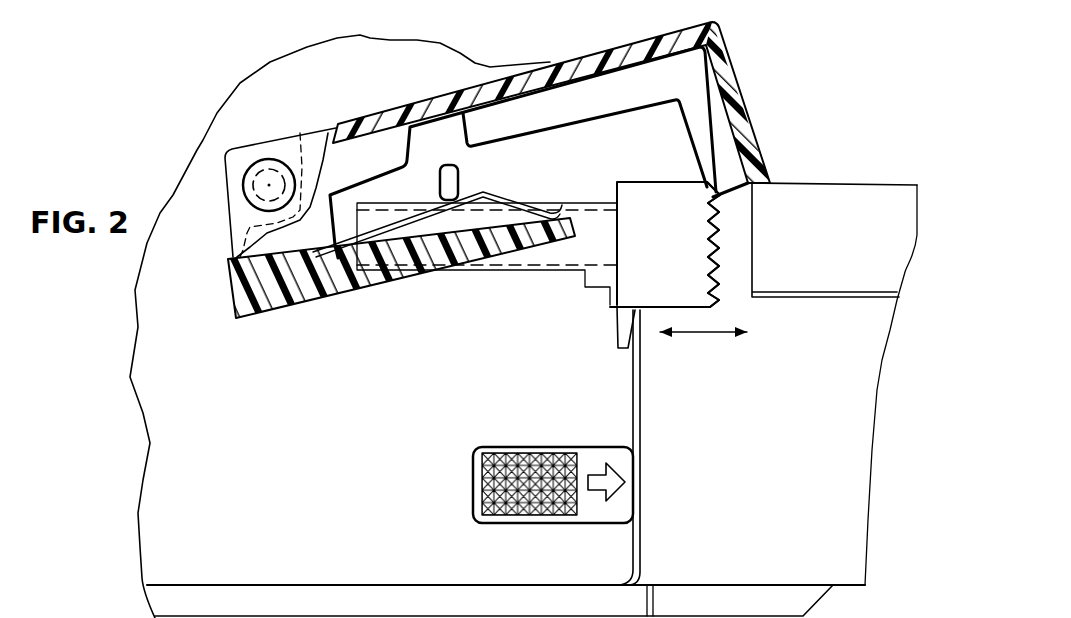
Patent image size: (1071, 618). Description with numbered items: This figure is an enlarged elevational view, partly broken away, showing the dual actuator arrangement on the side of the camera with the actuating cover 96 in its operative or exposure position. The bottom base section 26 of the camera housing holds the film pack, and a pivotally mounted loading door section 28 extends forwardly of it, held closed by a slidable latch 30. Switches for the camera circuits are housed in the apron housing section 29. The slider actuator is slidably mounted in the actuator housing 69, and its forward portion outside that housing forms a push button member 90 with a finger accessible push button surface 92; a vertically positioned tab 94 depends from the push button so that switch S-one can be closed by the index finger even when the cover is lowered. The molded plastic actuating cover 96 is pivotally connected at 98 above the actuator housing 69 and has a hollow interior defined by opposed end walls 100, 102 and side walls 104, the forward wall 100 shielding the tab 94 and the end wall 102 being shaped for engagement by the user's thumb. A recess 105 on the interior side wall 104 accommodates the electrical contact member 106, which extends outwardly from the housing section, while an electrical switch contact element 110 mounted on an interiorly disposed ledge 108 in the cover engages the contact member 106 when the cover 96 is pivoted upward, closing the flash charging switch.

The bottom base section 26 is at (163, 492).
The loading door section 28 is at (836, 576).
The apron housing section 29 is at (832, 182).
The slidable latch 30 is at (542, 453).
The actuator housing 69 is at (581, 209).
The push button member 90 is at (695, 276).
The push button surface 92 is at (722, 228).
The tab 94 is at (616, 313).
The actuating cover 96 is at (570, 109).
The pivotal connection 98 is at (260, 158).
The forward end wall 100 is at (758, 140).
The end wall 102 is at (230, 245).
The side wall 104 is at (332, 148).
The recess 105 is at (405, 163).
The electrical contact member 106 is at (454, 166).
The ledge 108 is at (292, 300).
The switch contact element 110 is at (463, 197).